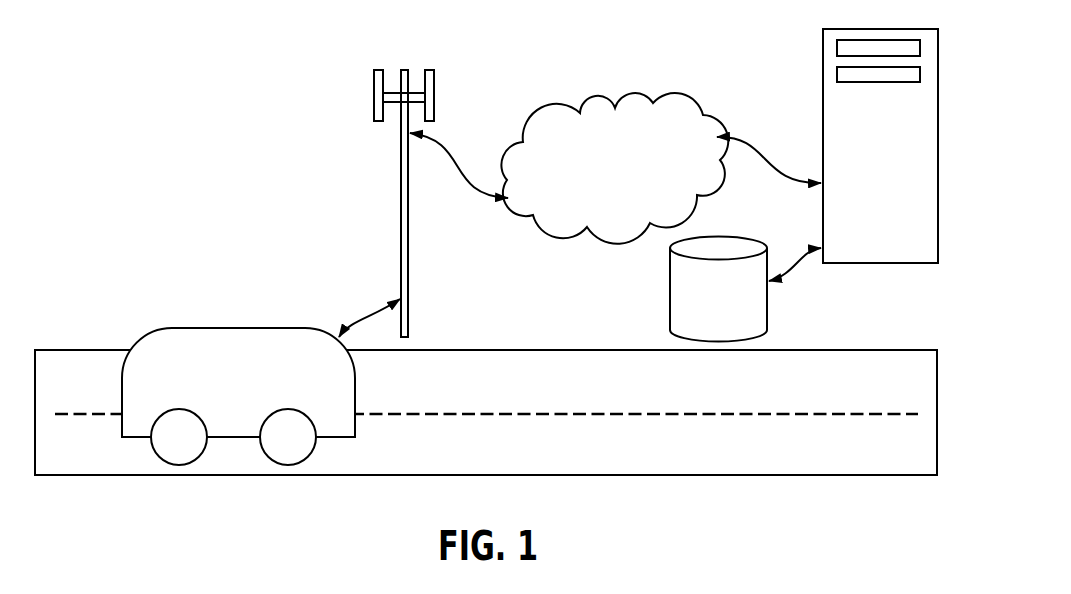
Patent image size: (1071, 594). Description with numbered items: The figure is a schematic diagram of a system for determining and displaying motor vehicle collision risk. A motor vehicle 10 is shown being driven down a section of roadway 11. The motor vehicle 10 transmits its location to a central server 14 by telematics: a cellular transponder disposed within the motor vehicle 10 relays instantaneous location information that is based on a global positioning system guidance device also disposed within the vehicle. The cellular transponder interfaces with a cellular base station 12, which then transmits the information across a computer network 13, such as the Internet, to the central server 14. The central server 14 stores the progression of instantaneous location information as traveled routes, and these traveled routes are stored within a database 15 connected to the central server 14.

The motor vehicle 10 is at (220, 382).
The roadway 11 is at (823, 461).
The cellular base station 12 is at (401, 215).
The computer network 13 is at (592, 177).
The central server 14 is at (867, 237).
The database 15 is at (703, 312).